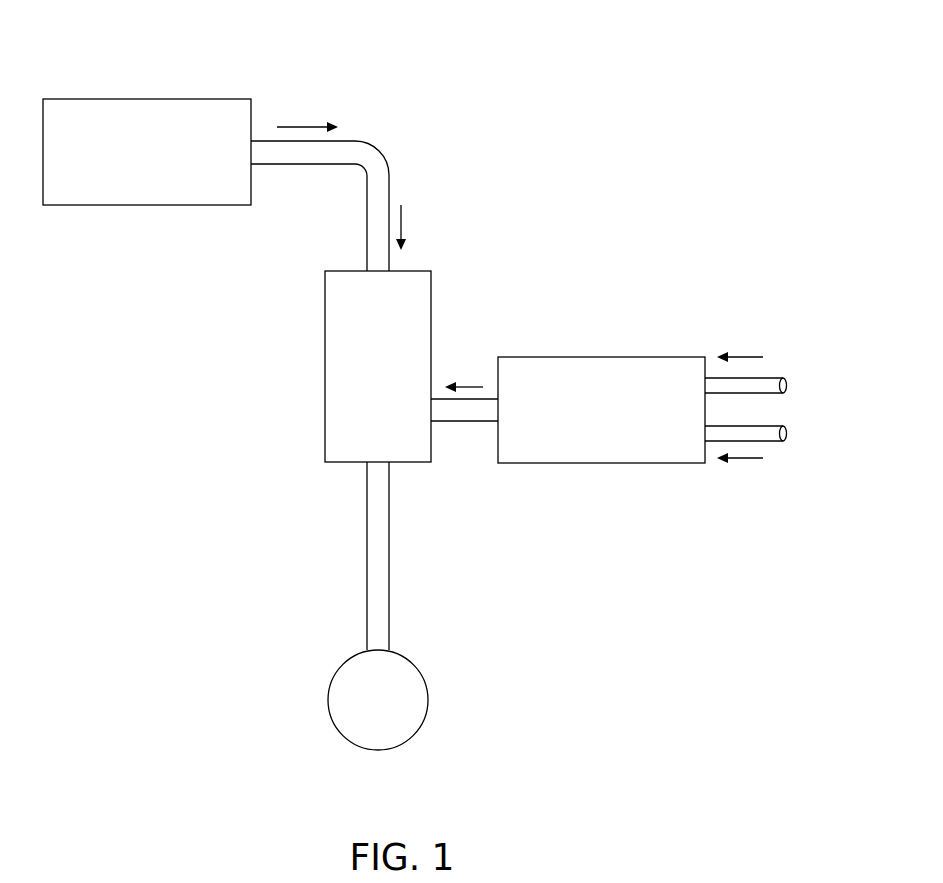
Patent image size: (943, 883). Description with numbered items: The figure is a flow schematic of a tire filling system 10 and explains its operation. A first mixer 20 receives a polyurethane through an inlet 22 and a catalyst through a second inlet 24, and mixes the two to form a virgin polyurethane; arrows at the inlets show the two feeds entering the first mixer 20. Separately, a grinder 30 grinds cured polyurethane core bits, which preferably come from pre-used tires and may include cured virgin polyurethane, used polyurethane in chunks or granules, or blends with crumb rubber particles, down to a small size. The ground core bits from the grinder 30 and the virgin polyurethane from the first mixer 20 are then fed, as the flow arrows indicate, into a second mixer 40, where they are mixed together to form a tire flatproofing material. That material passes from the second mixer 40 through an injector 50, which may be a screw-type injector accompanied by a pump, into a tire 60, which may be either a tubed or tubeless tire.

The tire filling system 10 is at (566, 70).
The first mixer 20 is at (593, 357).
The inlet 22 is at (773, 376).
The inlet 24 is at (768, 443).
The grinder 30 is at (148, 99).
The second mixer 40 is at (323, 367).
The injector 50 is at (366, 558).
The tire 60 is at (328, 699).